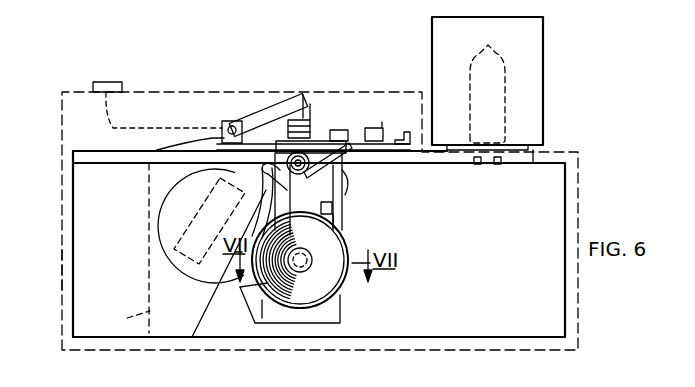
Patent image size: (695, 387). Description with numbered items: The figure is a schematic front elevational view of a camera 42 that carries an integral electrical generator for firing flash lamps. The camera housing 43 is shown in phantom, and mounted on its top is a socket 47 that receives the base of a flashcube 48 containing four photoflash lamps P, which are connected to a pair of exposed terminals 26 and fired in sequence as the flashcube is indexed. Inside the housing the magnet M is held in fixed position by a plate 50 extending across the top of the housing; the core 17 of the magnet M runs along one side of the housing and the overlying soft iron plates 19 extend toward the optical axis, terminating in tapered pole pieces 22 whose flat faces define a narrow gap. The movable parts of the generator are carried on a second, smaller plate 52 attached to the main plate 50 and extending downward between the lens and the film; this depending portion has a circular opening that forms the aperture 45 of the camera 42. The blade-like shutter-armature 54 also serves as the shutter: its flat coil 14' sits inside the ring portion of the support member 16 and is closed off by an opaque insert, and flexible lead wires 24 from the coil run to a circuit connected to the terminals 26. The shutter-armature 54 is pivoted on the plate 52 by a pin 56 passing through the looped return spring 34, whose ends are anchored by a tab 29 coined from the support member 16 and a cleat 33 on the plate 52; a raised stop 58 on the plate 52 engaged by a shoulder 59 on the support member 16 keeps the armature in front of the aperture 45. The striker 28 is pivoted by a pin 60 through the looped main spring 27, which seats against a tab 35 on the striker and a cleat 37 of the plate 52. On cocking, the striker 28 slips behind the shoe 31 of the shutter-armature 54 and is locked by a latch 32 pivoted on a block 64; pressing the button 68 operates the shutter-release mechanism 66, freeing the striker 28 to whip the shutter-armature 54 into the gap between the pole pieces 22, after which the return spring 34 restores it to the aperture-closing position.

The flat coil 14' is at (241, 301).
The support member 16 is at (262, 318).
The core 17 is at (152, 310).
The soft iron plates 19 is at (180, 330).
The pole pieces 22 is at (192, 268).
The flexible lead wires 24 is at (344, 196).
The exposed terminals 26 is at (477, 166).
The main spring 27 is at (357, 129).
The striker 28 is at (402, 140).
The tab 29 is at (223, 177).
The shoe 31 is at (320, 139).
The latch 32 is at (309, 102).
The cleat 33 is at (340, 173).
The return spring 34 is at (342, 185).
The tab 35 is at (273, 124).
The cleat 37 is at (383, 128).
The camera 42 is at (40, 275).
The camera housing 43 is at (580, 178).
The aperture 45 is at (304, 256).
The socket 47 is at (530, 156).
The flashcube 48 is at (543, 35).
The plate 50 is at (396, 158).
The plate 52 is at (205, 140).
The shutter-armature 54 is at (165, 197).
The pin 56 is at (263, 206).
The raised stop 58 is at (333, 208).
The shoulder 59 is at (334, 226).
The pin 60 is at (296, 126).
The block 64 is at (220, 127).
The shutter-release mechanism 66 is at (116, 123).
The button 68 is at (106, 82).
The magnet M is at (117, 255).
The photoflash lamps P is at (498, 100).